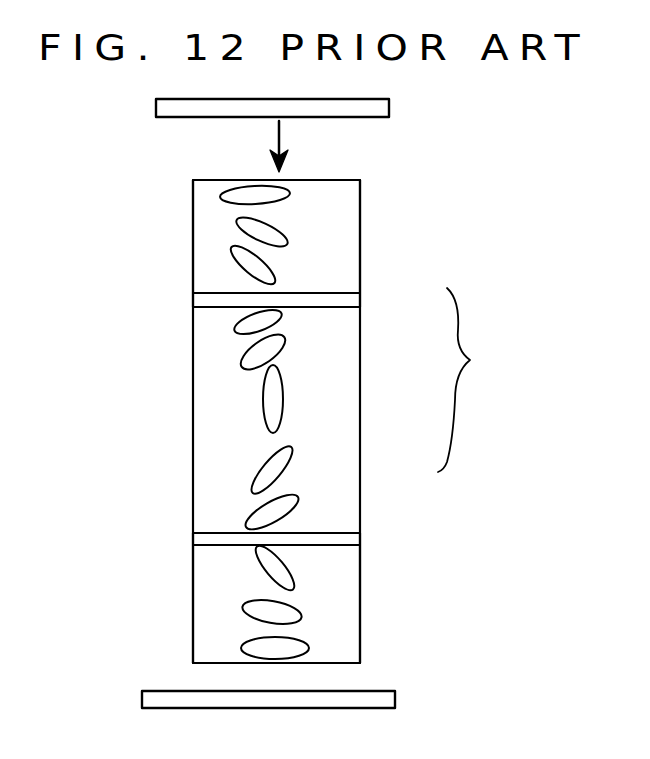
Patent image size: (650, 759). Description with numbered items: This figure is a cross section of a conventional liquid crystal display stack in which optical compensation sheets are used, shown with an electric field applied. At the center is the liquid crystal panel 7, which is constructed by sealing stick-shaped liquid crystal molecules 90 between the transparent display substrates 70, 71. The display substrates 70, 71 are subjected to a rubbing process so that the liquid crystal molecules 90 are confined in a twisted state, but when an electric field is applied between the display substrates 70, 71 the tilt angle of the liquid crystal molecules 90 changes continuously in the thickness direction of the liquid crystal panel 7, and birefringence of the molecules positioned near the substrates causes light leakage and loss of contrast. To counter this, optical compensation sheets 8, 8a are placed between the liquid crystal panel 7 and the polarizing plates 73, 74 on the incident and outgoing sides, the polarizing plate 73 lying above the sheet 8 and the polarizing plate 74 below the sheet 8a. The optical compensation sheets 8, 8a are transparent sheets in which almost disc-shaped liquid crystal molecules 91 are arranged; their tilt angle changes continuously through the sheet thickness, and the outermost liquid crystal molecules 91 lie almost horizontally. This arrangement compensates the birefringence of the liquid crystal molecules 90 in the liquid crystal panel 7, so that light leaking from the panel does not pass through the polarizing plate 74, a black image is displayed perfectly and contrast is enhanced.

The polarizing plate 73 is at (389, 110).
The optical compensation sheet 8 is at (345, 228).
The display substrate 70 is at (360, 300).
The liquid crystal molecules 90 is at (282, 320).
The display substrate 71 is at (358, 538).
The liquid crystal panel 7 is at (466, 380).
The optical compensation sheet 8a is at (338, 581).
The liquid crystal molecules 91 is at (228, 192).
The polarizing plate 74 is at (392, 700).